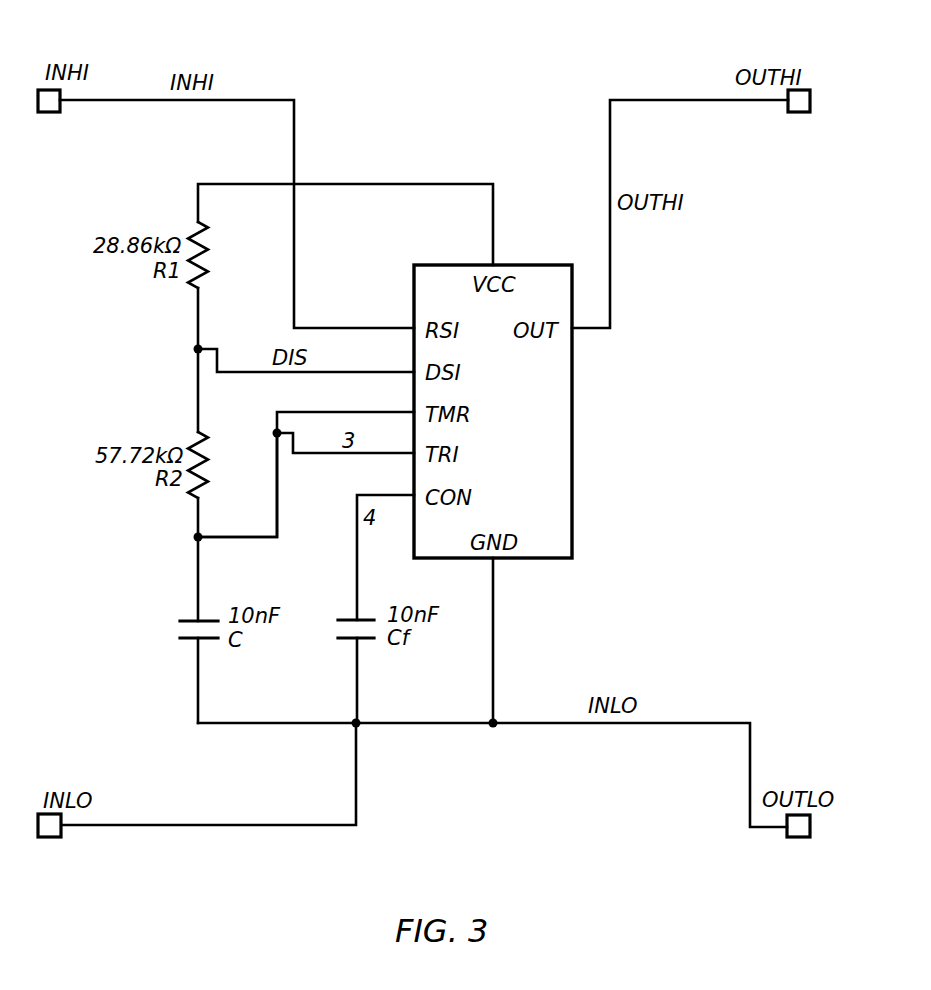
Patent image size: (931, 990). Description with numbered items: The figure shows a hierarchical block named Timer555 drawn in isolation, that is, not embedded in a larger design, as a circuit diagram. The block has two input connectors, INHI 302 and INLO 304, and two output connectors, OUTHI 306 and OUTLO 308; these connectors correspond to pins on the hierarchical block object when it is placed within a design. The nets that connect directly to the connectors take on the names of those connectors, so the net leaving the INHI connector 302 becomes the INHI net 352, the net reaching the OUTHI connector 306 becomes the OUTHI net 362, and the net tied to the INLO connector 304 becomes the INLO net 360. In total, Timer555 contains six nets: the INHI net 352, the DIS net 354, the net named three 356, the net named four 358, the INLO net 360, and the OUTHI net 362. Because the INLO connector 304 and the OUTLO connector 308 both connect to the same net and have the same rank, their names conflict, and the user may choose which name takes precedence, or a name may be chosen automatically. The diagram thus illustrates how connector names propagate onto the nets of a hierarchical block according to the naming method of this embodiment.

The INHI input connector 302 is at (72, 51).
The INHI net 352 is at (215, 60).
The OUTHI output connector 306 is at (790, 58).
The OUTHI net 362 is at (657, 181).
The DIS net 354 is at (317, 366).
The net 3 356 is at (280, 501).
The net 4 358 is at (360, 600).
The INLO net 360 is at (659, 686).
The INLO input connector 304 is at (72, 780).
The OUTLO output connector 308 is at (809, 776).